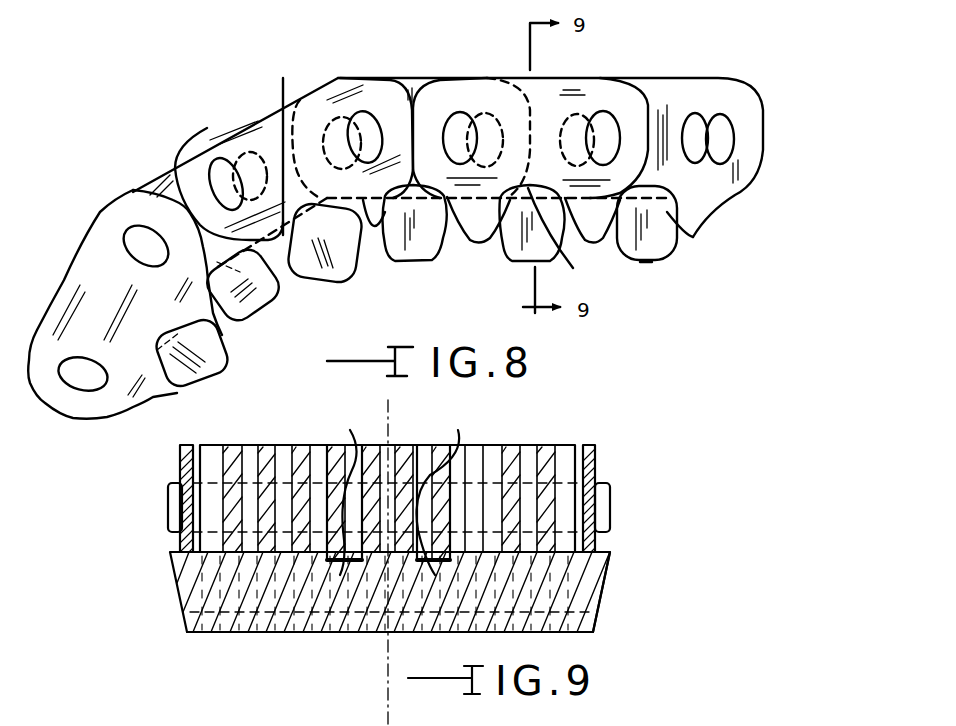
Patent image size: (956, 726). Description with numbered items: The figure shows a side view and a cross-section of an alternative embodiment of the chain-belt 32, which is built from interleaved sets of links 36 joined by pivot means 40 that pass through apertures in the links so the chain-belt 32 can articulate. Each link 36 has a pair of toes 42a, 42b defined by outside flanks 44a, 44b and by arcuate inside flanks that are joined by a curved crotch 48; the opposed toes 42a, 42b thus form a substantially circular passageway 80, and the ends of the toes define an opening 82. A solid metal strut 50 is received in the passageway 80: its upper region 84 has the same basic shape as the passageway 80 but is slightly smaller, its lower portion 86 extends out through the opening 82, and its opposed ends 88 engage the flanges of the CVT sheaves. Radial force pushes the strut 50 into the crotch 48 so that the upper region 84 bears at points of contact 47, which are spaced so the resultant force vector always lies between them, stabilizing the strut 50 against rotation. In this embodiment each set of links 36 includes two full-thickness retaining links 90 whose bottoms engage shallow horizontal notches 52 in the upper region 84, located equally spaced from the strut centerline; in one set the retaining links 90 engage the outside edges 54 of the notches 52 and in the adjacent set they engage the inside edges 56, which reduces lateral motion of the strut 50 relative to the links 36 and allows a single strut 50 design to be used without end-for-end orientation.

In FIG. 8, the chain-belt 32 is at (403, 63).
In FIG. 9, the chain-belt 32 is at (602, 442).
In FIG. 8, the link 36 is at (267, 115).
In FIG. 9, the link 36 is at (272, 447).
In FIG. 8, the pivot means 40 is at (722, 128).
In FIG. 9, the pivot means 40 is at (612, 507).
In FIG. 8, the toe 42a is at (185, 395).
In FIG. 8, the toe 42b is at (227, 330).
In FIG. 8, the outside flank 44a is at (288, 258).
In FIG. 8, the outside flank 44b is at (383, 257).
In FIG. 8, the points of contact 47 is at (277, 312).
In FIG. 8, the curved crotch 48 is at (280, 136).
In FIG. 8, the strut 50 is at (670, 260).
In FIG. 9, the strut 50 is at (592, 623).
In FIG. 9, the horizontal notch 52 is at (418, 440).
In FIG. 9, the outside edge 54 is at (425, 580).
In FIG. 9, the inside edge 56 is at (418, 565).
In FIG. 8, the passageway 80 is at (575, 240).
In FIG. 8, the opening 82 is at (508, 255).
In FIG. 8, the upper region 84 is at (700, 233).
In FIG. 9, the upper region 84 is at (168, 578).
In FIG. 8, the lower portion 86 is at (650, 262).
In FIG. 9, the lower portion 86 is at (186, 622).
In FIG. 9, the opposed ends 88 is at (603, 593).
In FIG. 9, the retaining link 90 is at (421, 481).